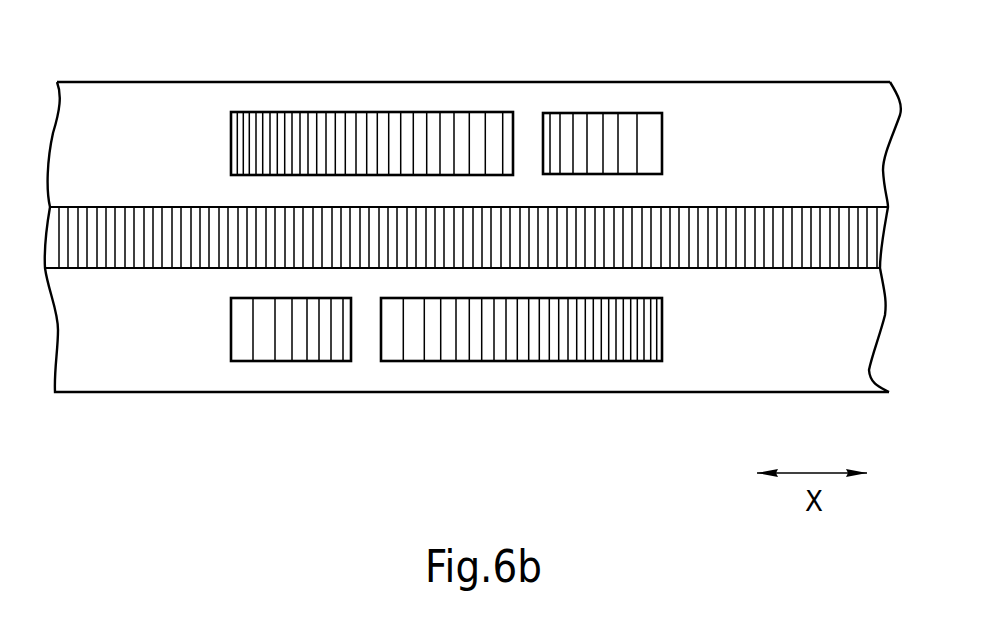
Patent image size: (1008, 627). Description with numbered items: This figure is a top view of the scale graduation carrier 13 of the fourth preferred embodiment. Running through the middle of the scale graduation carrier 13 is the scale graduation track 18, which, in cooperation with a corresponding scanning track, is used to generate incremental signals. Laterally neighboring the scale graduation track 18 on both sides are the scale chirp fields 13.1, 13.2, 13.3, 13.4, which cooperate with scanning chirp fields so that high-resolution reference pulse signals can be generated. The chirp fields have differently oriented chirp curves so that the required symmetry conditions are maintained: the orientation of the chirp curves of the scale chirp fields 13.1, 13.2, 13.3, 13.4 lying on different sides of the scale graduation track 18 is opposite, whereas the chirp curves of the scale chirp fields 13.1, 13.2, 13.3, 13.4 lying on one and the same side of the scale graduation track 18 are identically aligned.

The scale graduation carrier 13 is at (133, 98).
The scale graduation track 18 is at (780, 207).
The scale chirp field 13.1 is at (307, 357).
The scale chirp field 13.2 is at (543, 352).
The scale chirp field 13.3 is at (582, 122).
The scale chirp field 13.4 is at (338, 117).